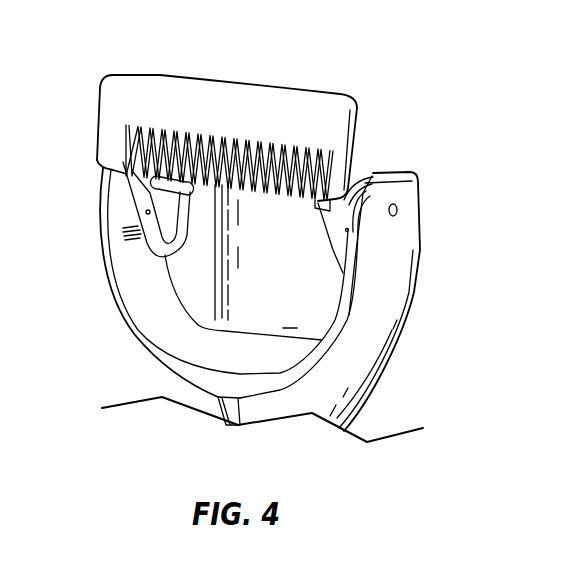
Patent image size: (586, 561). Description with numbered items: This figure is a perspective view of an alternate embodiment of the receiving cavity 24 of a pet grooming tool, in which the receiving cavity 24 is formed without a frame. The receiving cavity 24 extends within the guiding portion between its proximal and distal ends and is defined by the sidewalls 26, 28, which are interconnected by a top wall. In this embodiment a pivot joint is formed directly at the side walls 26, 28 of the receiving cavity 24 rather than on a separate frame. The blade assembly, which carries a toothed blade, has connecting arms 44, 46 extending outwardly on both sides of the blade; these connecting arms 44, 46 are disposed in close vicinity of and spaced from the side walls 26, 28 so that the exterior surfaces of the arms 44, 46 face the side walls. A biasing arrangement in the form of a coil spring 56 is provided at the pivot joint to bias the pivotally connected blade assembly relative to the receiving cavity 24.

The receiving cavity 24 is at (299, 296).
The sidewall 26 is at (108, 203).
The sidewall 28 is at (405, 227).
The connecting arm 44 is at (145, 202).
The connecting arm 46 is at (357, 167).
The coil spring 56 is at (368, 177).